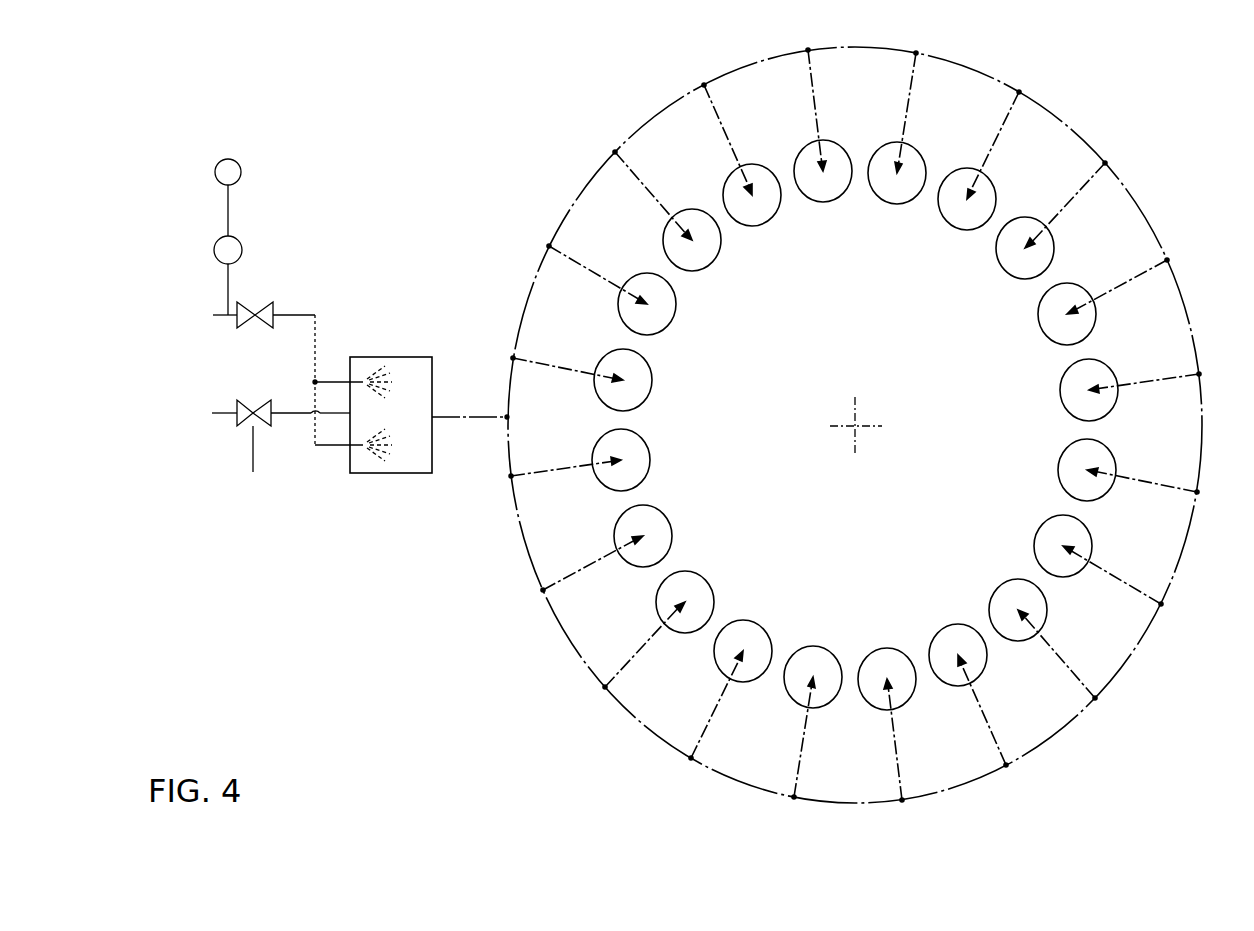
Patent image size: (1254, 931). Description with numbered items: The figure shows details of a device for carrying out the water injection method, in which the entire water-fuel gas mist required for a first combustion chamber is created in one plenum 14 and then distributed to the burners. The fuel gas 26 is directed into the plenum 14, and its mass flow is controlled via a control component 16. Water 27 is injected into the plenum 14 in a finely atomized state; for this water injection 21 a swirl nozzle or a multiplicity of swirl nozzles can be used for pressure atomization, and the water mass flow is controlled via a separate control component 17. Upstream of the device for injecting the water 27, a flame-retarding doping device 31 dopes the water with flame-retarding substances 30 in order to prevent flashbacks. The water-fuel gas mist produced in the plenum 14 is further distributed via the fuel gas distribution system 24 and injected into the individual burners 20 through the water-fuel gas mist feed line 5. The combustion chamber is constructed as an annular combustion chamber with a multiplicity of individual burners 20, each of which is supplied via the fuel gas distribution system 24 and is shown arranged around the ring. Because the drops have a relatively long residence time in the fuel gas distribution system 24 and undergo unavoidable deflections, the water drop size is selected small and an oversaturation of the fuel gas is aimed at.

The water-fuel gas mist feed line 5 is at (583, 267).
The plenum 14 is at (424, 486).
The control component 16 is at (254, 459).
The control component 17 is at (255, 302).
The burner 20 is at (644, 552).
The water injection 21 is at (377, 465).
The fuel gas distribution system 24 is at (638, 718).
The fuel gas 26 is at (260, 414).
The water 27 is at (243, 373).
The flame-retarding substances 30 is at (235, 158).
The flame-retarding doping device 31 is at (208, 250).